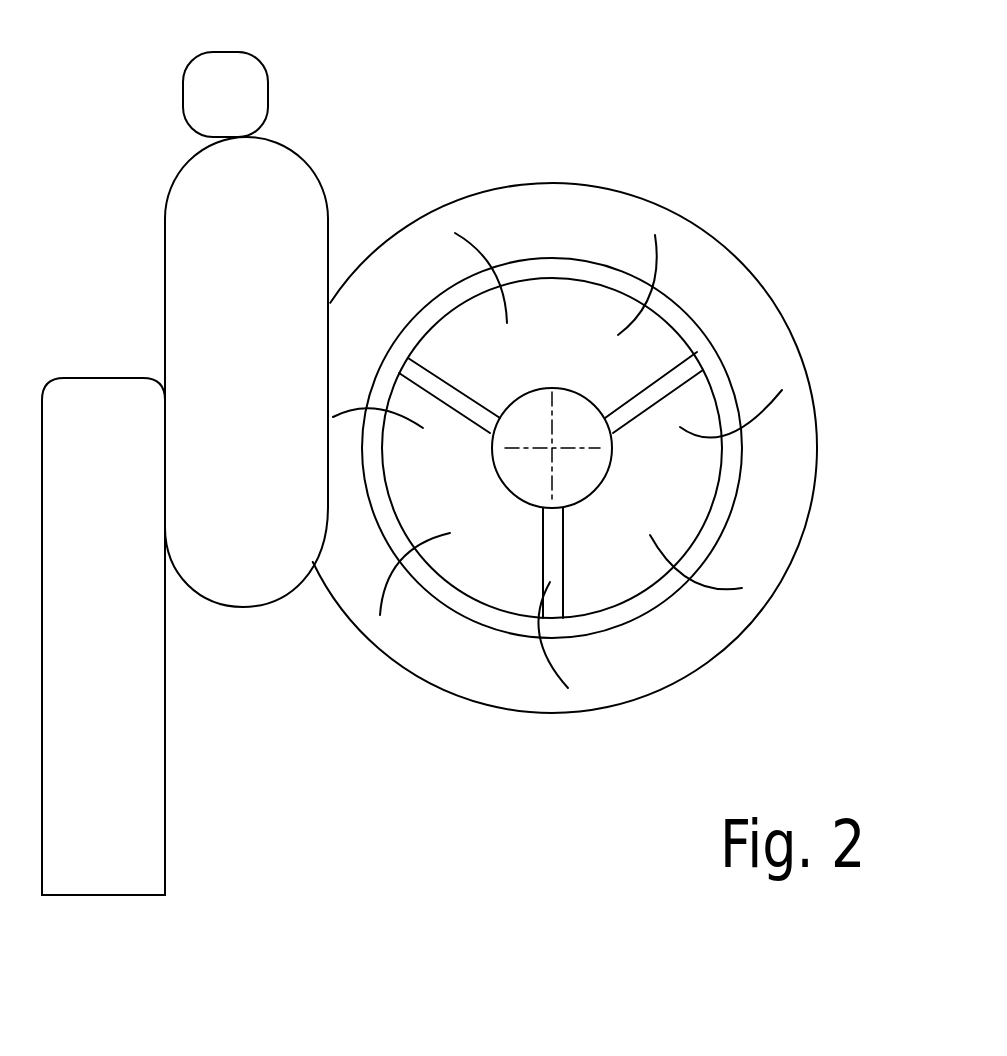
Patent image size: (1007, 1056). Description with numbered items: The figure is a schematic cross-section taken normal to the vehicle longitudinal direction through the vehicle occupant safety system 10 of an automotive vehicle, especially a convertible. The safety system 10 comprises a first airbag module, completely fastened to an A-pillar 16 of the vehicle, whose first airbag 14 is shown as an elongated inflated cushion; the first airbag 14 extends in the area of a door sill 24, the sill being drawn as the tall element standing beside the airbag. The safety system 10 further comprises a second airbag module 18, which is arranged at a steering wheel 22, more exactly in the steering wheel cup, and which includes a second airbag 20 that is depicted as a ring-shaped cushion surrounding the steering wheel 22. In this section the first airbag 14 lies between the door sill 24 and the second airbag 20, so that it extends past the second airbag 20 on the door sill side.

The vehicle occupant safety system 10 is at (358, 178).
The first airbag 14 is at (245, 227).
The A-pillar 16 is at (230, 87).
The second airbag module 18 is at (552, 450).
The second airbag 20 is at (720, 287).
The steering wheel 22 is at (627, 402).
The door sill 24 is at (120, 423).